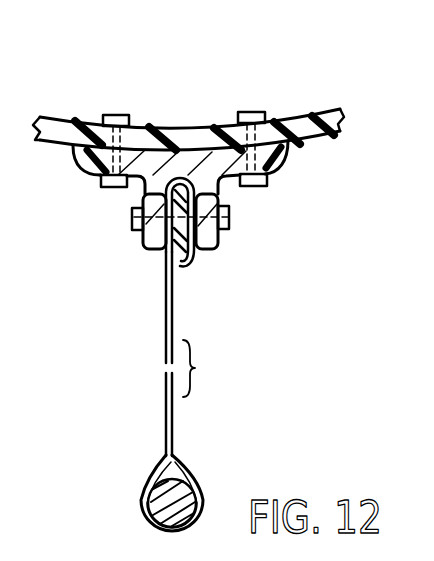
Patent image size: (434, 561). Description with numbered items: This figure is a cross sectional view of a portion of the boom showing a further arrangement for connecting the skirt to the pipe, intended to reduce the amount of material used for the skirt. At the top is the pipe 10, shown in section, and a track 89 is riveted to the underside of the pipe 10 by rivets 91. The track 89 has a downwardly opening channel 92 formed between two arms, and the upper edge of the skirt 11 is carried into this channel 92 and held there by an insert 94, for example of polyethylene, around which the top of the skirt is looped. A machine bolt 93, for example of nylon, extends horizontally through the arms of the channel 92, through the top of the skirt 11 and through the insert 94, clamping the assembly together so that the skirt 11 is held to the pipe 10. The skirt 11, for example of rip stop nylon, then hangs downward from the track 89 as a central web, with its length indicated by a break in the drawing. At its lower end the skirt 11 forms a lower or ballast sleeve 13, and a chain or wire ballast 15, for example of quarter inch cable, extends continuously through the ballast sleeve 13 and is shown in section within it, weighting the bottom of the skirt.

The pipe 10 is at (333, 134).
The track 89 is at (280, 166).
The rivets 91 is at (117, 115).
The channel 92 is at (140, 198).
The machine bolt 93 is at (230, 218).
The insert 94 is at (192, 248).
The skirt 11 is at (166, 327).
The ballast sleeve 13 is at (201, 490).
The wire ballast 15 is at (148, 486).